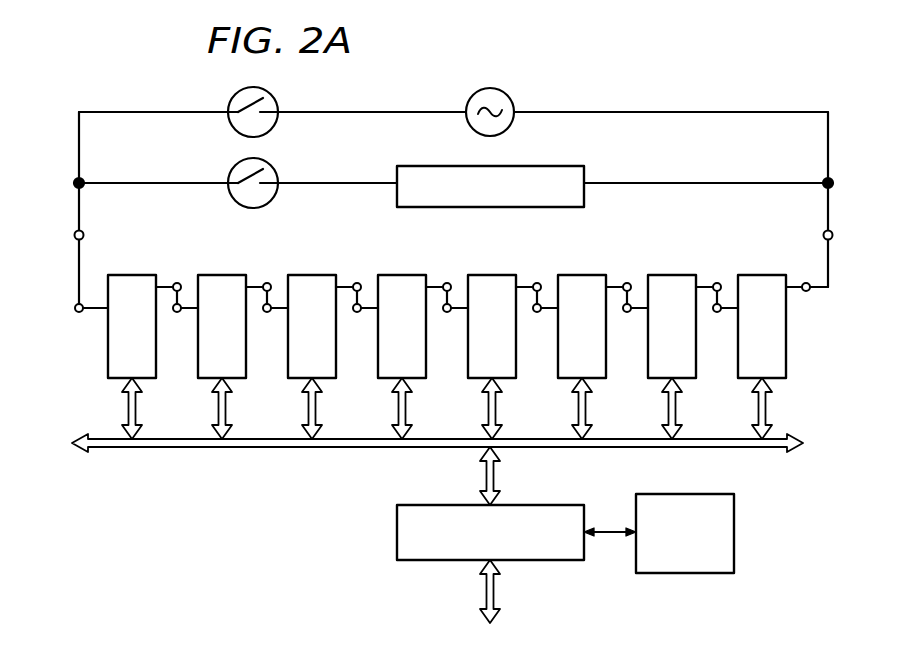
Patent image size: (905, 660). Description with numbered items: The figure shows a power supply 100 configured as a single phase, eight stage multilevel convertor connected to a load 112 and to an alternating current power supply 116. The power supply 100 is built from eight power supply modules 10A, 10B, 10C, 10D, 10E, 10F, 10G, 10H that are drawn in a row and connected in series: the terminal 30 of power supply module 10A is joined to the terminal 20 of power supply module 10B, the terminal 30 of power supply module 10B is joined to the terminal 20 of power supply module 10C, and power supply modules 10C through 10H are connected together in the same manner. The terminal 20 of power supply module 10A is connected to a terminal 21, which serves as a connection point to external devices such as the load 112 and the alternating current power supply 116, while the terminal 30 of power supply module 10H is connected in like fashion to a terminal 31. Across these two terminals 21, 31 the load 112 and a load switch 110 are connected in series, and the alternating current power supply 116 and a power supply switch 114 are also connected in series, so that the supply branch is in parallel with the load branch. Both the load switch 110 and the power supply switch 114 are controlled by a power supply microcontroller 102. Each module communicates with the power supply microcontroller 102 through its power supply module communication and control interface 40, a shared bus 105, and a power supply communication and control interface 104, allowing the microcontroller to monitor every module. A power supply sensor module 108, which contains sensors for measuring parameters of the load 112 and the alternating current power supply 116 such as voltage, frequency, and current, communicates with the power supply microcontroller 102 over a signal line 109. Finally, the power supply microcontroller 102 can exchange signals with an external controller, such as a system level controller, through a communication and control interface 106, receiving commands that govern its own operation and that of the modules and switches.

The power supply 100 is at (578, 85).
The power supply switch 114 is at (228, 105).
The load switch 110 is at (230, 171).
The alternating current power supply 116 is at (473, 97).
The load 112 is at (420, 167).
The terminal 21 is at (76, 236).
The terminal 31 is at (823, 235).
The terminal 30 is at (177, 283).
The terminal 20 is at (79, 312).
The power supply module 10A is at (116, 347).
The power supply module 10B is at (206, 347).
The power supply module 10C is at (296, 347).
The power supply module 10D is at (386, 347).
The power supply module 10E is at (476, 347).
The power supply module 10F is at (566, 347).
The power supply module 10G is at (656, 347).
The power supply module 10H is at (746, 347).
The power supply module communication and control interface 40 is at (128, 400).
The bus 105 is at (221, 448).
The power supply communication and control interface 104 is at (483, 472).
The power supply microcontroller 102 is at (397, 531).
The communication and control interface 106 is at (483, 588).
The signal line 109 is at (612, 526).
The power supply sensor module 108 is at (734, 532).